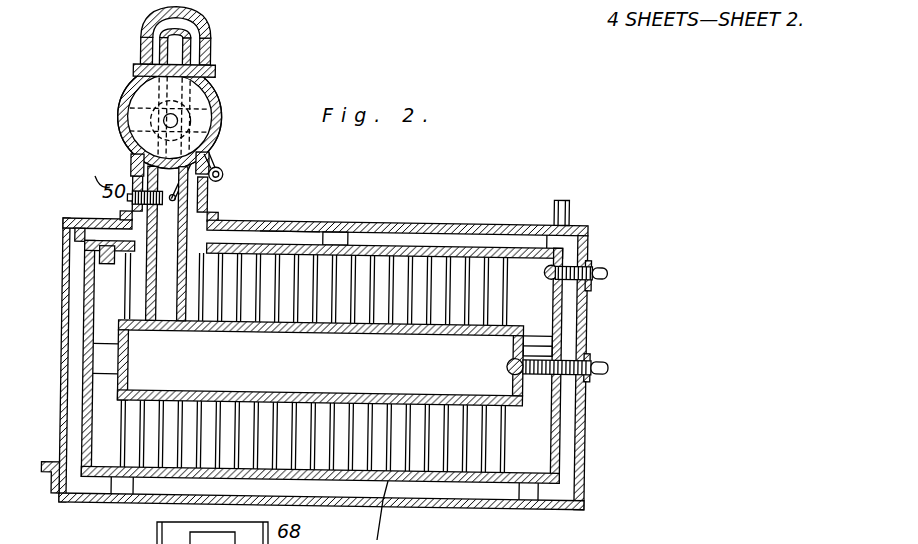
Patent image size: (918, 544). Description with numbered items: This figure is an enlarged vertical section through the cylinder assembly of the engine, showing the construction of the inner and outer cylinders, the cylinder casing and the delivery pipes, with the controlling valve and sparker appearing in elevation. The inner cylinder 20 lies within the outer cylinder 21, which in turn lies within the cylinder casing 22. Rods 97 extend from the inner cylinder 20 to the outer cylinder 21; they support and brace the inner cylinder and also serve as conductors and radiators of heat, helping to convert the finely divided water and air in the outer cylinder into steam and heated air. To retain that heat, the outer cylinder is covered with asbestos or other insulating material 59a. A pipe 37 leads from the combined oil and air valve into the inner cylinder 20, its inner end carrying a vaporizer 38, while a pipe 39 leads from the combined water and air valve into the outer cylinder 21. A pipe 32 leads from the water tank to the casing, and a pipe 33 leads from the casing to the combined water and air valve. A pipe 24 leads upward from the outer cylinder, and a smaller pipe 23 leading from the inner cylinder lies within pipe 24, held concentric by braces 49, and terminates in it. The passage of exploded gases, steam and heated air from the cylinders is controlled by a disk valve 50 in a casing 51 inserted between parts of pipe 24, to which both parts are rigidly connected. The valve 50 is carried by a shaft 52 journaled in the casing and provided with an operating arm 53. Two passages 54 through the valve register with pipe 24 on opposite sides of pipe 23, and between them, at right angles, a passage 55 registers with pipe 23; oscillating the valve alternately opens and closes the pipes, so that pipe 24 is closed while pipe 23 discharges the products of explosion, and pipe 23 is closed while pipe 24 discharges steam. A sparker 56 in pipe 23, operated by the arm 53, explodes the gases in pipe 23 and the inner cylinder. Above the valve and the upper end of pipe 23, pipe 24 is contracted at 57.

The inner cylinder 20 is at (334, 363).
The outer cylinder 21 is at (395, 252).
The cylinder casing 22 is at (327, 230).
The pipe 23 is at (187, 34).
The pipe 24 is at (209, 45).
The pipe 32 is at (50, 467).
The pipe 33 is at (566, 208).
The pipe 37 is at (603, 365).
The vaporizer 38 is at (511, 366).
The pipe 39 is at (604, 267).
The braces 49 is at (135, 68).
The disk valve 50 is at (152, 98).
The casing 51 is at (221, 108).
The shaft 52 is at (177, 119).
The operating arm 53 is at (221, 163).
The passages 54 is at (203, 100).
The passage 55 is at (113, 125).
The sparker 56 is at (133, 198).
The contracted portion 57 is at (141, 18).
The insulating material 59a is at (281, 222).
The rods 97 is at (478, 250).